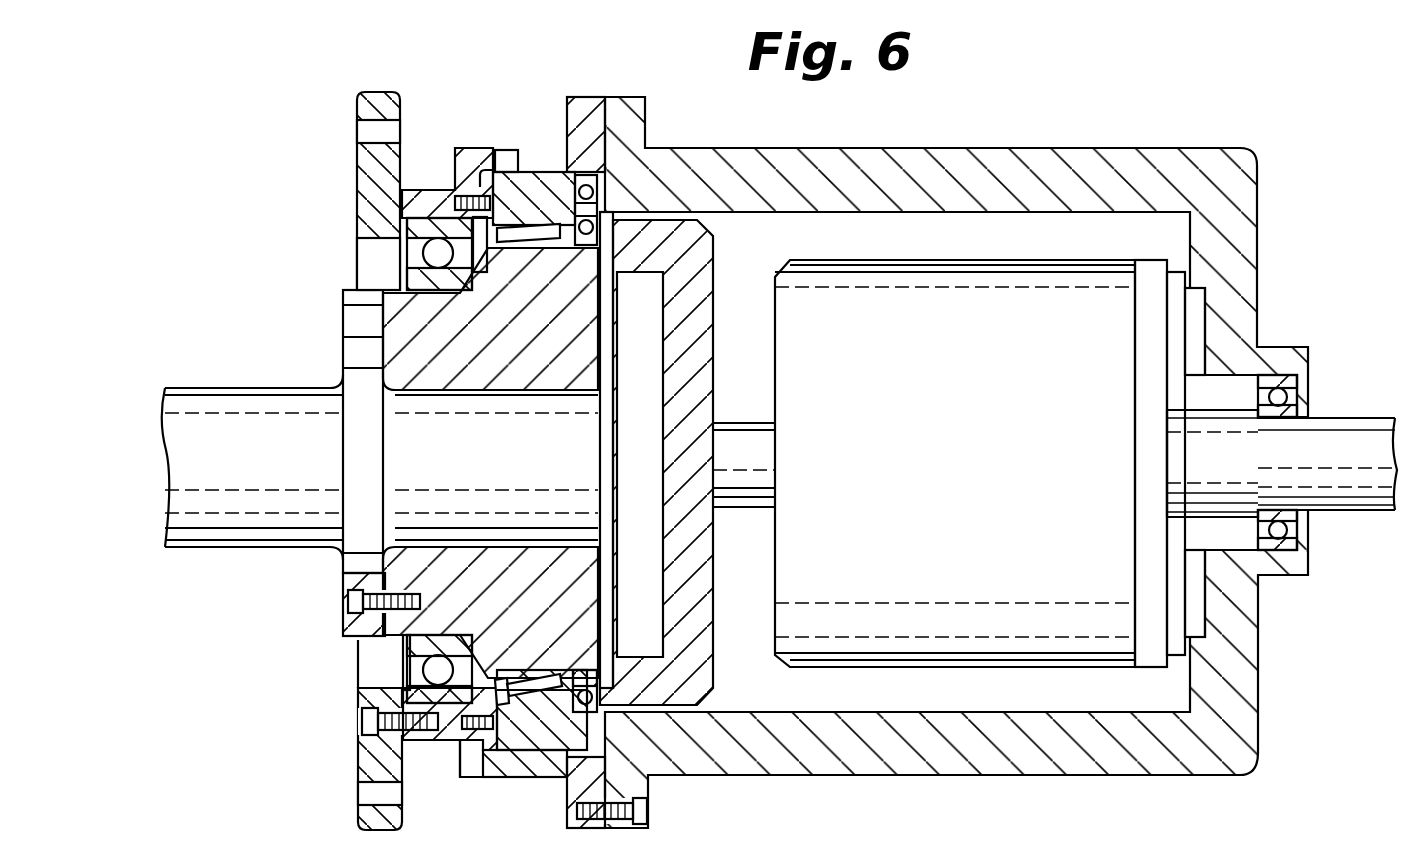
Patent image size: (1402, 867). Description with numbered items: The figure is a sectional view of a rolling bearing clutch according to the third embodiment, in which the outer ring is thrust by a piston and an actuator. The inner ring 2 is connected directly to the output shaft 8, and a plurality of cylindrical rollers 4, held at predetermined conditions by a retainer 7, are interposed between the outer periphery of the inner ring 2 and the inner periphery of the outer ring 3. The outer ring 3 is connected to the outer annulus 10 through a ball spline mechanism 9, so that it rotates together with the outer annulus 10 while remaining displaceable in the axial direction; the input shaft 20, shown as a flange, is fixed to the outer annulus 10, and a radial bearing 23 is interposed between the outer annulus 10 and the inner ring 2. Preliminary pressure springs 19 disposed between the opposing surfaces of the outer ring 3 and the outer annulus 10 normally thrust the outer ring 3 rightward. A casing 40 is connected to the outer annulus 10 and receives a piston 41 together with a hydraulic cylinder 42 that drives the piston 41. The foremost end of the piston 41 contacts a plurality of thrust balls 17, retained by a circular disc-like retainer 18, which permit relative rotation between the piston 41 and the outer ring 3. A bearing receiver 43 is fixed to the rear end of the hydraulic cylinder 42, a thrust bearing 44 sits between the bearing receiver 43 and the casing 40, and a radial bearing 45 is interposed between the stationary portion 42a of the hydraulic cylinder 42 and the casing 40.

The inner ring 2 is at (388, 641).
The outer ring 3 is at (515, 183).
The cylindrical rollers 4 is at (515, 692).
The retainer 7 is at (478, 777).
The output shaft 8 is at (252, 420).
The ball spline mechanism 9 is at (583, 186).
The outer annulus 10 is at (468, 148).
The thrust balls 17 is at (577, 712).
The retainer 18 is at (548, 700).
The preliminary pressure springs 19 is at (446, 730).
The input shaft 20 is at (358, 104).
The radial bearing 23 is at (428, 228).
The casing 40 is at (1200, 165).
The piston 41 is at (655, 228).
The hydraulic cylinder 42 is at (1082, 308).
The stationary portion 42a is at (1340, 480).
The bearing receiver 43 is at (1172, 283).
The thrust bearing 44 is at (1193, 316).
The radial bearing 45 is at (1278, 566).